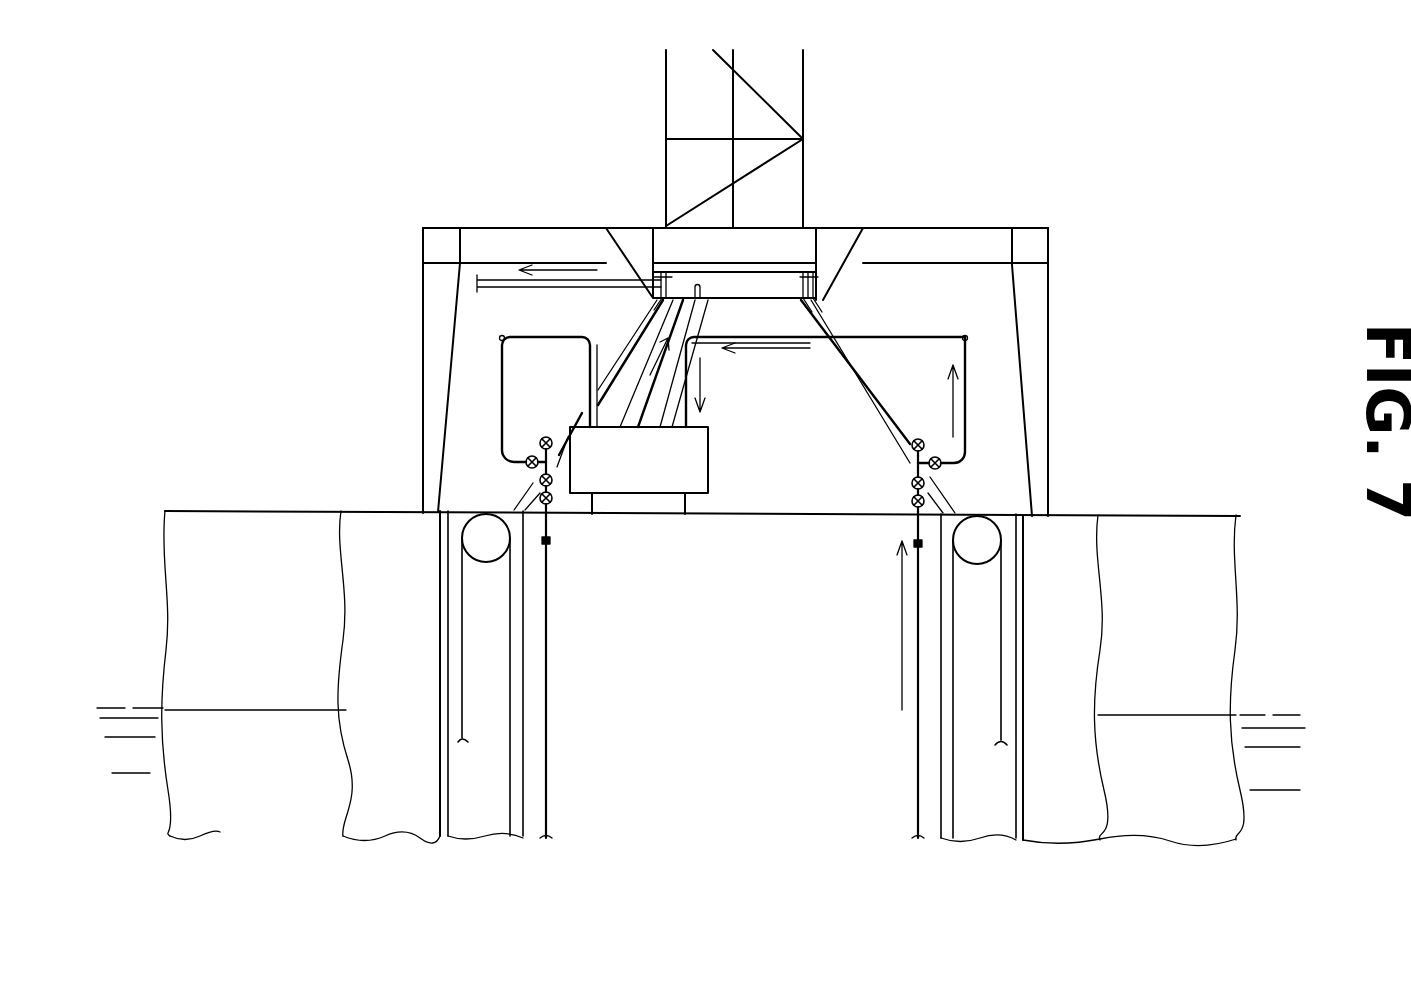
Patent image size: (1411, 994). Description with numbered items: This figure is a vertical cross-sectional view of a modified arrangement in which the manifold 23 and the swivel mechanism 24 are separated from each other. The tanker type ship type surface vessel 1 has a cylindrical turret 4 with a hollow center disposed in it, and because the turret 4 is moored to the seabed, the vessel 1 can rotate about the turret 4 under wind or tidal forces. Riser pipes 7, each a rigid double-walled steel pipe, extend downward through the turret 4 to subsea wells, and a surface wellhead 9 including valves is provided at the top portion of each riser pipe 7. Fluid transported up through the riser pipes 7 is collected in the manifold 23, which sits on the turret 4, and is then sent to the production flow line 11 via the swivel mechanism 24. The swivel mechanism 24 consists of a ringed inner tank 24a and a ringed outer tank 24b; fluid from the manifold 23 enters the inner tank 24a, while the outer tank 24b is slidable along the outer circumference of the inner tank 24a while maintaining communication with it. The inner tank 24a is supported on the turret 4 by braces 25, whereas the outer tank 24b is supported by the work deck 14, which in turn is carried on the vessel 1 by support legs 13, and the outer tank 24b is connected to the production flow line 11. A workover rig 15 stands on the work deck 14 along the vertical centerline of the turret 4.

The ship type surface vessel 1 is at (290, 510).
The cylindrical turret 4 is at (447, 648).
The riser pipe 7 is at (549, 642).
The surface wellhead 9 is at (551, 504).
The production flow line 11 is at (497, 279).
The support legs 13 is at (1036, 370).
The work deck 14 is at (917, 228).
The workover rig 15 is at (806, 103).
The manifold 23 is at (695, 460).
The swivel mechanism 24 is at (728, 262).
The inner tank 24a is at (800, 291).
The outer tank 24b is at (648, 296).
The braces 25 is at (858, 379).